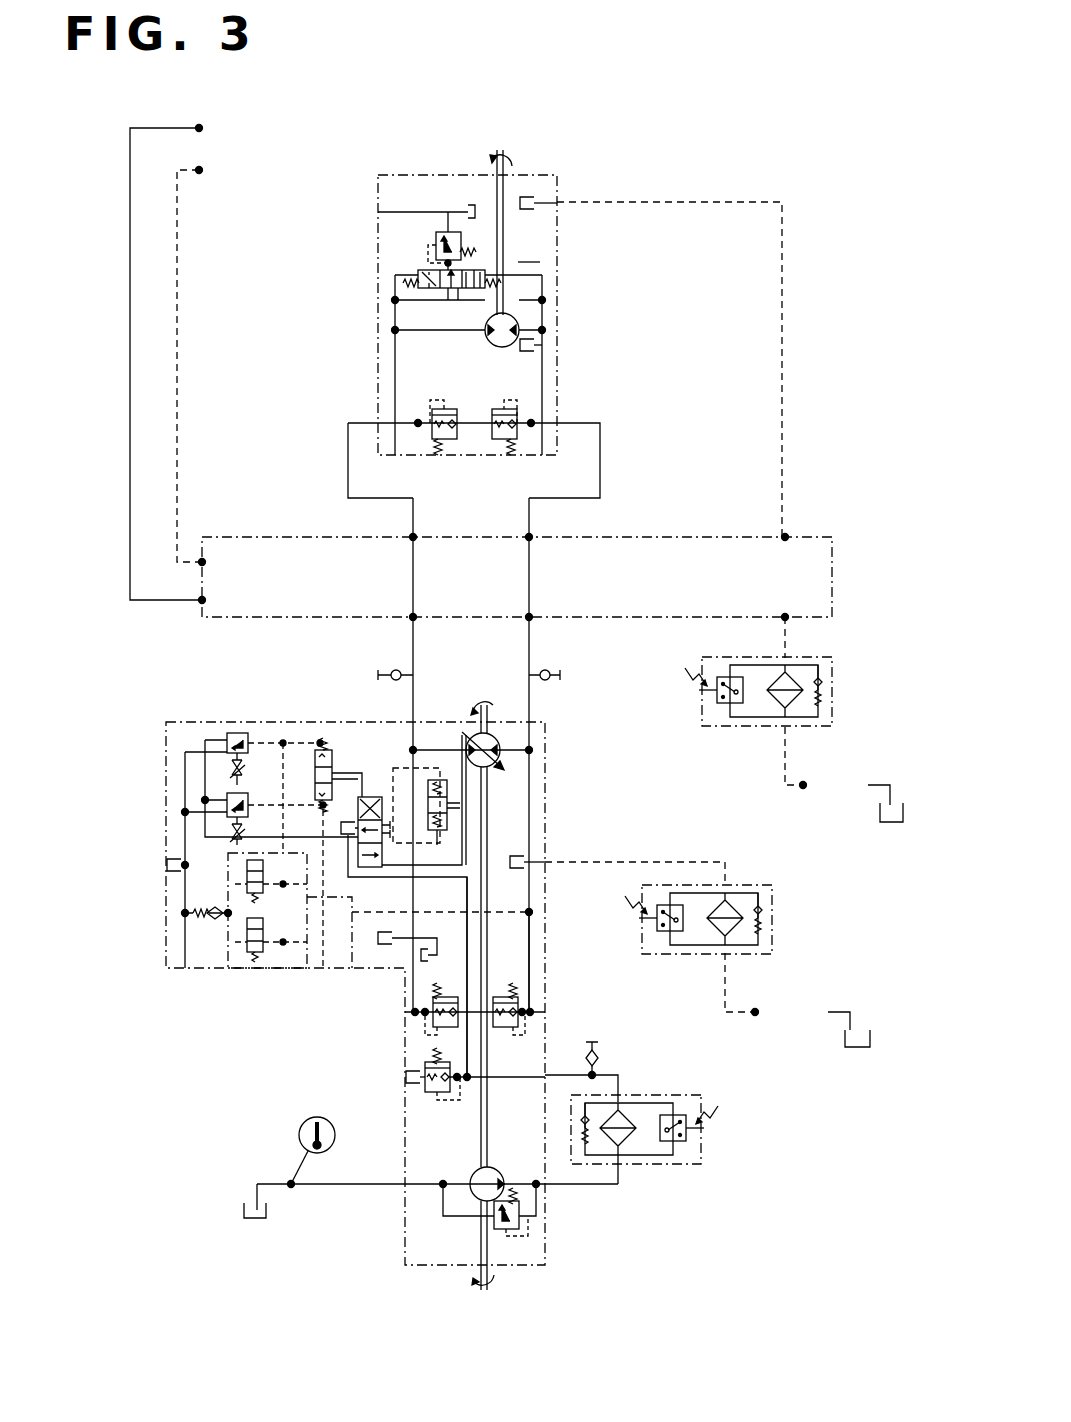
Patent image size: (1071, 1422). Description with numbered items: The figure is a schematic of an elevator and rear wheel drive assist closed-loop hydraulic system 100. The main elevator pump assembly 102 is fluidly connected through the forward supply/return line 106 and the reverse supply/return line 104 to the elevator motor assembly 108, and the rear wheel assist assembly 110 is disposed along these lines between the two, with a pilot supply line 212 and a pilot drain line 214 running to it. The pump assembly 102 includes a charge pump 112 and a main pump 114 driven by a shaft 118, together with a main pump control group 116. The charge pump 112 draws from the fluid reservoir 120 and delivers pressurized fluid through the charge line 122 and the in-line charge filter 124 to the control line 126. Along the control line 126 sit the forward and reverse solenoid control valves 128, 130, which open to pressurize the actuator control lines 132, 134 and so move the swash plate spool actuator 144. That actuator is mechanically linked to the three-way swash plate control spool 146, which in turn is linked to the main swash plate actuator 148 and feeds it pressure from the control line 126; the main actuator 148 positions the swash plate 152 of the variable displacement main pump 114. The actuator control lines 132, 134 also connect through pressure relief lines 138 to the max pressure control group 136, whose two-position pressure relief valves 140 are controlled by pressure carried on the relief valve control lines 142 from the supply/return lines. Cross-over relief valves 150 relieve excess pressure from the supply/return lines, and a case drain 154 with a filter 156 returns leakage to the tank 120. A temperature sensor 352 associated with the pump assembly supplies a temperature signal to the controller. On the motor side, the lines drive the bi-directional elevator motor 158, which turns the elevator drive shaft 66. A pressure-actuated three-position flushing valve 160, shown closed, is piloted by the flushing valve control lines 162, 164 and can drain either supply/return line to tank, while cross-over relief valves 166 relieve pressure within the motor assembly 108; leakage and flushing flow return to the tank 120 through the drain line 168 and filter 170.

The elevator drive shaft 66 is at (505, 152).
The elevator and rear wheel drive assist closed-loop hydraulic system 100 is at (703, 128).
The main elevator pump assembly 102 is at (562, 832).
The reverse supply/return line 104 is at (413, 625).
The forward supply/return line 106 is at (529, 628).
The elevator motor assembly 108 is at (583, 335).
The rear wheel assist assembly 110 is at (202, 537).
The charge pump 112 is at (472, 1172).
The main pump 114 is at (483, 732).
The main pump control group 116 is at (182, 716).
The shaft 118 is at (500, 1272).
The fluid reservoir 120 is at (268, 1219).
The charge line 122 is at (468, 972).
The in-line charge filter 124 is at (690, 1095).
The control line 126 is at (185, 832).
The forward solenoid control valve 128 is at (227, 735).
The reverse solenoid control valve 130 is at (227, 786).
The actuator control line 132 is at (273, 743).
The actuator control line 134 is at (300, 750).
The max pressure control group 136 is at (208, 956).
The pressure relief lines 138 is at (290, 853).
The two-position pressure relief valves 140 is at (250, 958).
The relief valve control lines 142 is at (355, 892).
The swash plate spool actuator 144 is at (323, 748).
The three-way swash plate control spool 146 is at (370, 797).
The main swash plate actuator 148 is at (437, 780).
The cross-over relief valves 150 is at (520, 1000).
The swash plate 152 is at (510, 760).
The case drain 154 is at (683, 862).
The filter 156 is at (775, 900).
The bi-directional elevator motor 158 is at (490, 342).
The pressure-actuated 3-position flushing valve 160 is at (420, 270).
The flushing valve control line 162 is at (418, 283).
The flushing valve control line 164 is at (545, 262).
The cross-over relief valves 166 is at (498, 440).
The drain line 168 is at (782, 312).
The filter 170 is at (803, 658).
The pilot supply line 212 is at (128, 437).
The pilot drain line 214 is at (175, 350).
The temperature sensor 352 is at (300, 1128).